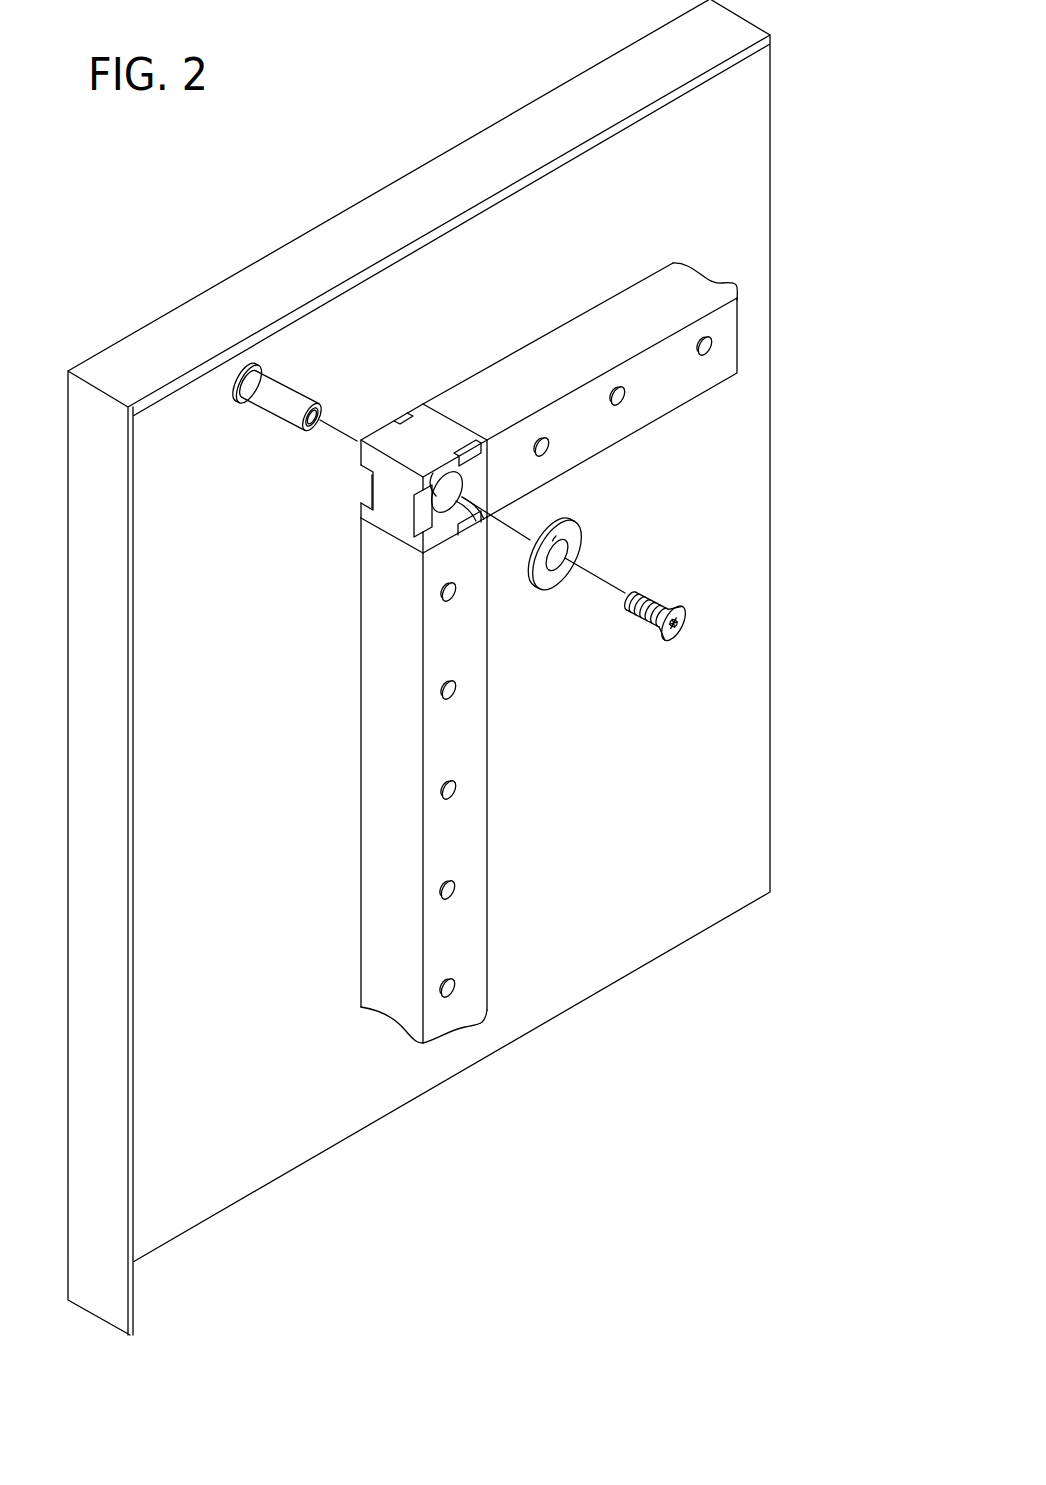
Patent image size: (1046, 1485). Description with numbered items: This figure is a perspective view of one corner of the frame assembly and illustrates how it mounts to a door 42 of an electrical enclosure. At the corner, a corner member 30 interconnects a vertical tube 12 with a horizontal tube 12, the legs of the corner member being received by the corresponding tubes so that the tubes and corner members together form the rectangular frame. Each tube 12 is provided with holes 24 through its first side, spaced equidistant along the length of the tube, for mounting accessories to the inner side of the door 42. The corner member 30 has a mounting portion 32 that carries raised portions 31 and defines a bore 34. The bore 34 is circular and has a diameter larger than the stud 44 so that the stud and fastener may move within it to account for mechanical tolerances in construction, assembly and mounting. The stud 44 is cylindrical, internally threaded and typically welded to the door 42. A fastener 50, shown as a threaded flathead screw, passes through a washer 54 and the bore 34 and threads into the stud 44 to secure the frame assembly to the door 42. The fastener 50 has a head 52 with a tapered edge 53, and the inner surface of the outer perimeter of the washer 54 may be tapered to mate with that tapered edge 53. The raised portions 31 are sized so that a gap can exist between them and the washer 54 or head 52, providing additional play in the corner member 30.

The tubular member 12 is at (585, 350).
The hole 24 is at (548, 452).
The corner member 30 is at (363, 483).
The raised portion 31 is at (432, 470).
The mounting portion 32 is at (397, 513).
The bore 34 is at (452, 491).
The door 42 is at (483, 238).
The stud 44 is at (298, 402).
The fastener 50 is at (631, 653).
The head 52 is at (667, 640).
The tapered edge 53 is at (653, 642).
The washer 54 is at (577, 532).